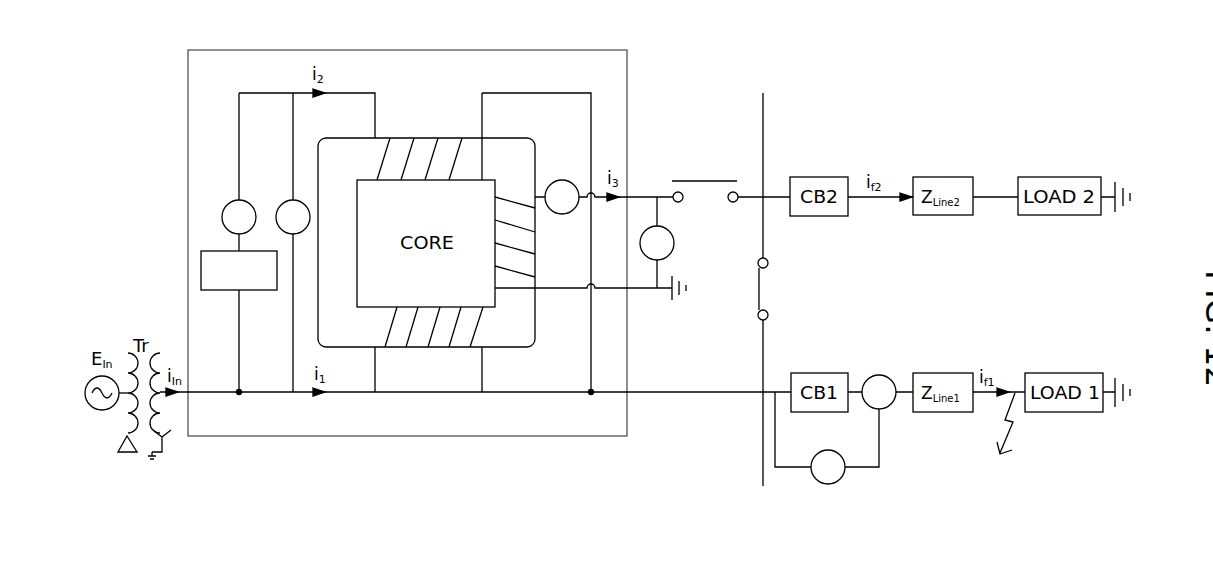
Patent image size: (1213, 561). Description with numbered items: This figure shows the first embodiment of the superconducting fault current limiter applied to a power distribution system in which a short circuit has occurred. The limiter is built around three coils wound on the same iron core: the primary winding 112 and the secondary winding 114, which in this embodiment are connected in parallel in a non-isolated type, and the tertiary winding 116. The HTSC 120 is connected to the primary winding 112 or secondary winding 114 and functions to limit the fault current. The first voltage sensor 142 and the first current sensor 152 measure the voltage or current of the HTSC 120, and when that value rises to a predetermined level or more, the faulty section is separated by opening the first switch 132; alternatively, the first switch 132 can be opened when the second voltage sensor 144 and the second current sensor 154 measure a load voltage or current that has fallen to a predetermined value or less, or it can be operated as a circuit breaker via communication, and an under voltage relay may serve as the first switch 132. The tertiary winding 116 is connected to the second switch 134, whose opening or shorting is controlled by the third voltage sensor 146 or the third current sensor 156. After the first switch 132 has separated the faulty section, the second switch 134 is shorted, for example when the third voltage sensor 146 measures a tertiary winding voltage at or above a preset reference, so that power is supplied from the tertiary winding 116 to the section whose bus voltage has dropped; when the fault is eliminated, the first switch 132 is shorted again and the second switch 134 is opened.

The primary winding 112 is at (448, 350).
The secondary winding 114 is at (462, 136).
The tertiary winding 116 is at (517, 205).
The HTSC 120 is at (201, 272).
The first switch 132 is at (790, 292).
The second switch 134 is at (665, 180).
The first voltage sensor 142 is at (284, 203).
The second voltage sensor 144 is at (829, 485).
The third voltage sensor 146 is at (675, 243).
The first current sensor 152 is at (232, 204).
The second current sensor 154 is at (889, 408).
The third current sensor 156 is at (563, 180).